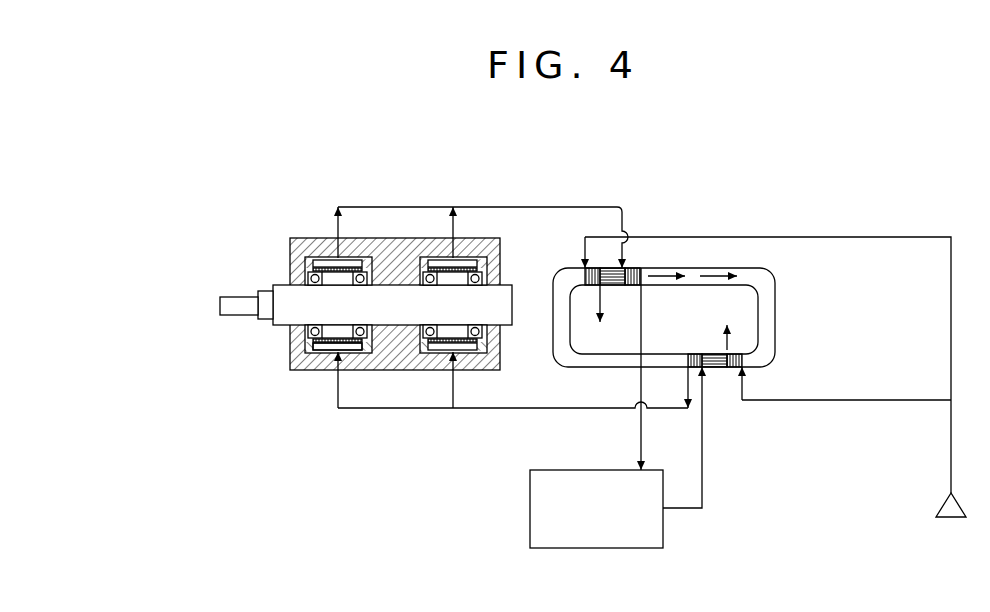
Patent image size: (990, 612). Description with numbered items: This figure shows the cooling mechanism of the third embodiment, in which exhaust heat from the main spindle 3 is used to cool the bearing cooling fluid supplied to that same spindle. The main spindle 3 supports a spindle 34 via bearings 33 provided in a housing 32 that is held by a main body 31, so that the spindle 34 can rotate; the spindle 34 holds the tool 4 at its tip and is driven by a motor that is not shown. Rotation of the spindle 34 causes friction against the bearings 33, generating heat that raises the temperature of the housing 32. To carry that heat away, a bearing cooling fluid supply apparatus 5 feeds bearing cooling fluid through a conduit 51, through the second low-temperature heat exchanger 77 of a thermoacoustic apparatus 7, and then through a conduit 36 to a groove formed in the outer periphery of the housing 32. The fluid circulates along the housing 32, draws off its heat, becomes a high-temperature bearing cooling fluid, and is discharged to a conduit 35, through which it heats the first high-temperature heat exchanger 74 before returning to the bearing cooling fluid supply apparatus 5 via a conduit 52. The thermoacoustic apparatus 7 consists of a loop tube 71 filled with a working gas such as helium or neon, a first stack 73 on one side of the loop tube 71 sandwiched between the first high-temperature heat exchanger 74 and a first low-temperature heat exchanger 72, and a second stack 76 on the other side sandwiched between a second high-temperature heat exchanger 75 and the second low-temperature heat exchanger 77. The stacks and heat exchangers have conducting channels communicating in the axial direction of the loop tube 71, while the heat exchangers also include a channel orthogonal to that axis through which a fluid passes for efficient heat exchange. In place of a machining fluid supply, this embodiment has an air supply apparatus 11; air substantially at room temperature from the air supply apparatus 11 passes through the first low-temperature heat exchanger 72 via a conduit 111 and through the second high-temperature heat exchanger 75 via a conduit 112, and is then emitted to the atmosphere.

The main spindle 3 is at (208, 367).
The main body 31 is at (320, 370).
The housing 32 is at (307, 372).
The bearings 33 is at (290, 345).
The spindle 34 is at (290, 313).
The tool 4 is at (238, 305).
The conduit 35 is at (576, 207).
The conduit 36 is at (490, 408).
The bearing cooling fluid supply apparatus 5 is at (542, 543).
The conduit 51 is at (703, 455).
The conduit 52 is at (641, 450).
The thermoacoustic apparatus 7 is at (665, 335).
The loop tube 71 is at (612, 362).
The first low-temperature heat exchanger 72 is at (592, 272).
The first stack 73 is at (613, 280).
The first high-temperature heat exchanger 74 is at (636, 272).
The second high-temperature heat exchanger 75 is at (740, 363).
The second stack 76 is at (715, 361).
The second low-temperature heat exchanger 77 is at (700, 353).
The air supply apparatus 11 is at (947, 505).
The conduit 111 is at (817, 237).
The conduit 112 is at (835, 400).